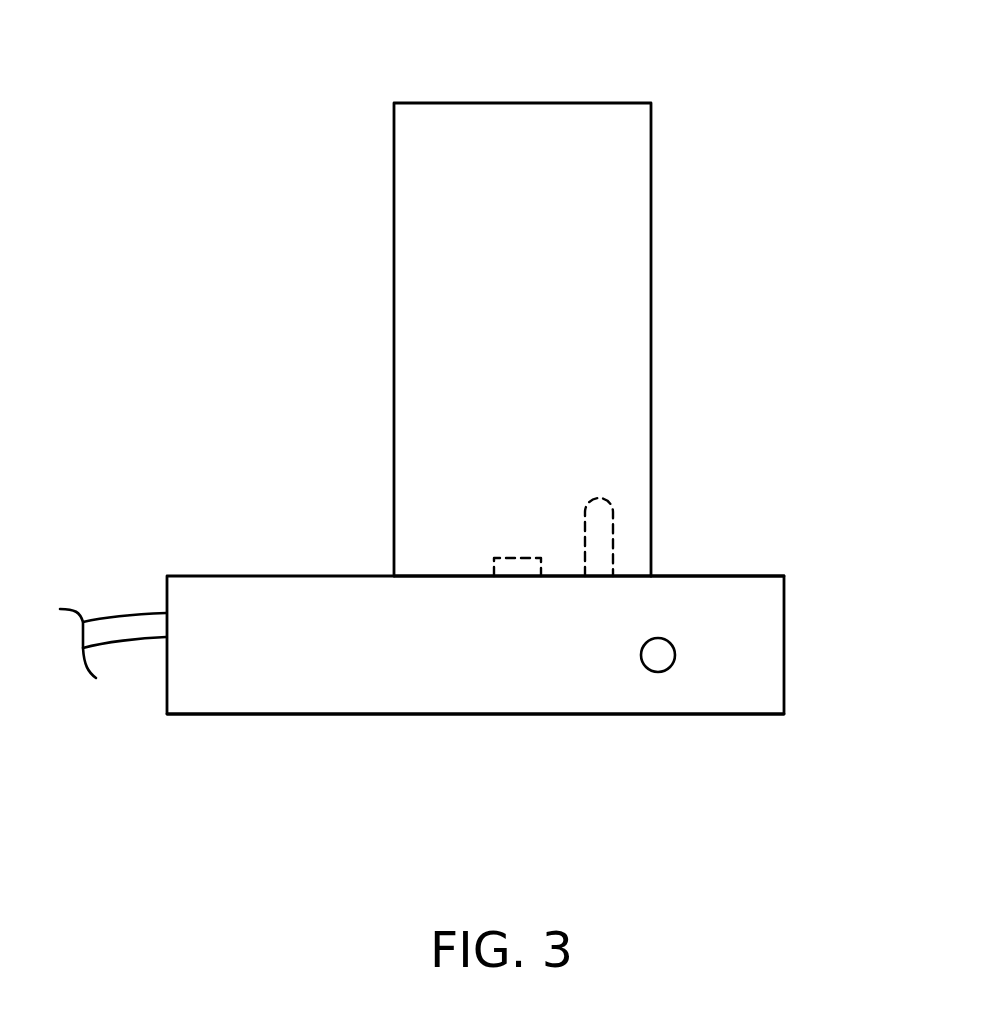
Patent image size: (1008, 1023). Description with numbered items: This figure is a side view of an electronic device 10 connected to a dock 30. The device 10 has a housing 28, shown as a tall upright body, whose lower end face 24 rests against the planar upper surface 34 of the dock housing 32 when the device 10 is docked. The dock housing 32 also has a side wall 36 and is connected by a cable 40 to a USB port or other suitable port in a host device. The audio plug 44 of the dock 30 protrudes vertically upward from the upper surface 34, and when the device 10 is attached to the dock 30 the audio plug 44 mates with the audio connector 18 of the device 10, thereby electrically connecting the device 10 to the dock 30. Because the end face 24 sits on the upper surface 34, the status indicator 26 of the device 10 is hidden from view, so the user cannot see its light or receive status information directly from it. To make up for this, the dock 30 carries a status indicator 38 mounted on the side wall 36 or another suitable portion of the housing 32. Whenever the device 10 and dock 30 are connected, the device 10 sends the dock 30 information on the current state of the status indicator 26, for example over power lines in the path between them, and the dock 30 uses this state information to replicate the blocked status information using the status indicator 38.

The electronic device 10 is at (707, 72).
The audio connector 18 is at (647, 461).
The lower end face 24 is at (421, 576).
The status indicator 26 is at (518, 558).
The housing 28 is at (652, 263).
The dock 30 is at (523, 636).
The housing 32 is at (310, 716).
The planar upper surface 34 is at (732, 576).
The side wall 36 is at (475, 688).
The status indicator 38 is at (658, 672).
The cable 40 is at (137, 632).
The audio plug 44 is at (612, 512).